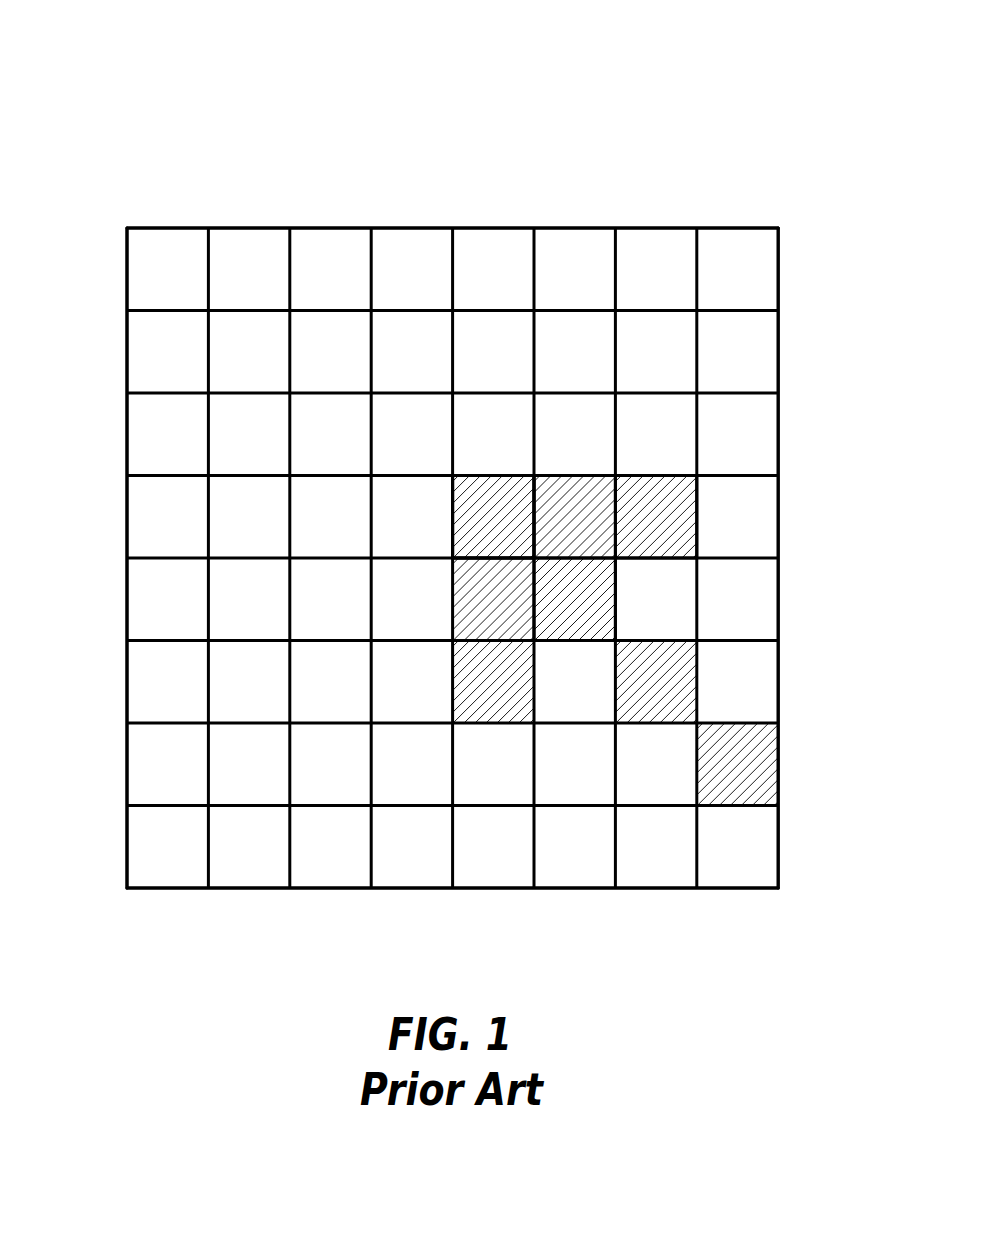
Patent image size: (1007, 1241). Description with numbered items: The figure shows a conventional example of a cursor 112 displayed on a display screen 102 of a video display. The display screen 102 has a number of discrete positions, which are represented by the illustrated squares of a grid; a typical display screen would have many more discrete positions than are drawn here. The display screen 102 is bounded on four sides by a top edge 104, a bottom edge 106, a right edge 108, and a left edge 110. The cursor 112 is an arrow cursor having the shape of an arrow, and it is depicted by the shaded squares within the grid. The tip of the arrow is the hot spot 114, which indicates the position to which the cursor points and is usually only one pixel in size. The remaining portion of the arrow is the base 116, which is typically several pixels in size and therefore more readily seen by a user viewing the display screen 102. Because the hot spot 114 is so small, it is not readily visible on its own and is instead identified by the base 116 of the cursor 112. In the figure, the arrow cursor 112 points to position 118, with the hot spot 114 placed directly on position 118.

The display screen 102 is at (410, 73).
The top edge 104 is at (408, 230).
The bottom edge 106 is at (487, 888).
The right edge 108 is at (778, 520).
The left edge 110 is at (125, 517).
The cursor 112 is at (633, 473).
The hot spot 114 is at (455, 475).
The base 116 is at (613, 600).
The position 118 is at (465, 512).